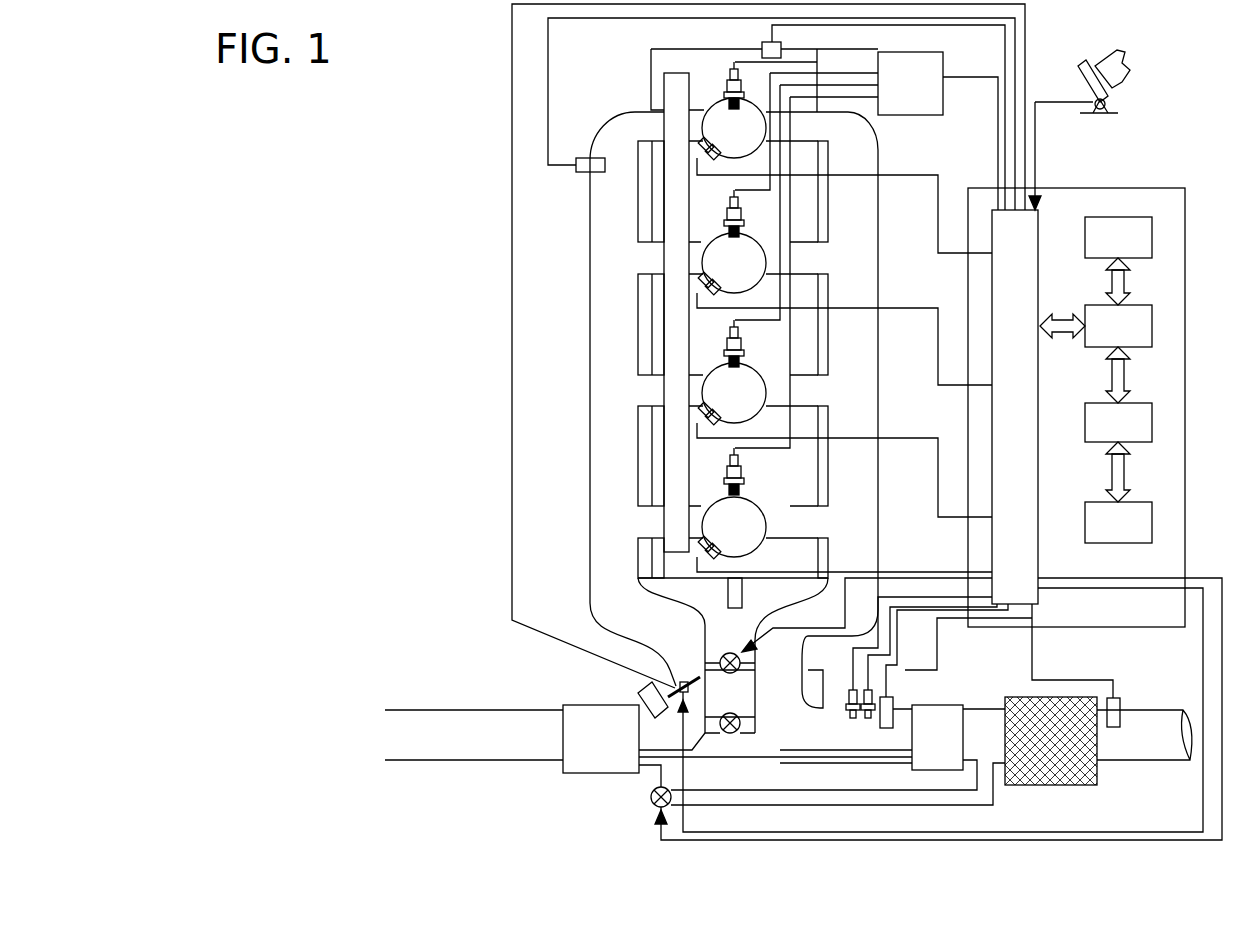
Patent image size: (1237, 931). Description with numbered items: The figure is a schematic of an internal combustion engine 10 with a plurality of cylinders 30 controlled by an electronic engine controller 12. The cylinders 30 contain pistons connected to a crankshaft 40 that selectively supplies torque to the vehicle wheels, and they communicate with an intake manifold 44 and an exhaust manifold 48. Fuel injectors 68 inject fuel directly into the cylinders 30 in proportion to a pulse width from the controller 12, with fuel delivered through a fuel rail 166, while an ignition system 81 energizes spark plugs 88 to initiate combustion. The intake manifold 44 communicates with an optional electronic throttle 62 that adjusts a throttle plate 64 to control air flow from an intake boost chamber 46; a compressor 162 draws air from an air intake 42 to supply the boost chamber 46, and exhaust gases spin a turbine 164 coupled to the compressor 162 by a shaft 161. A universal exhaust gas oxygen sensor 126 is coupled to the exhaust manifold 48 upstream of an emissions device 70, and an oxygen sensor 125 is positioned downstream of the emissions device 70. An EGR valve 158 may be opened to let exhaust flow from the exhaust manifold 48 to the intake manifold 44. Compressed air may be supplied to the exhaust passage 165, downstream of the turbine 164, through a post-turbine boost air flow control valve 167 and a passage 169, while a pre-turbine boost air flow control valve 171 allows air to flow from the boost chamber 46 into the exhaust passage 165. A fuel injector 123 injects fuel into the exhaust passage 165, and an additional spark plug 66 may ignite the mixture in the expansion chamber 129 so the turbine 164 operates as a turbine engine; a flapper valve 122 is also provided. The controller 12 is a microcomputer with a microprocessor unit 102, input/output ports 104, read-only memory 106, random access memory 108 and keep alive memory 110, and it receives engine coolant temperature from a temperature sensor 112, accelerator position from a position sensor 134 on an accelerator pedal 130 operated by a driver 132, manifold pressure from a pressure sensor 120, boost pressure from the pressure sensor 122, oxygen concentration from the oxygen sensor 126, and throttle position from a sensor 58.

The internal combustion engine 10 is at (462, 142).
The electronic engine controller 12 is at (1150, 188).
The cylinders 30 is at (734, 327).
The crankshaft 40 is at (728, 596).
The air intake 42 is at (465, 749).
The intake manifold 44 is at (628, 364).
The intake boost chamber 46 is at (676, 742).
The exhaust manifold 48 is at (863, 274).
The throttle position sensor 58 is at (706, 693).
The electronic throttle 62 is at (640, 680).
The throttle plate 64 is at (676, 678).
The additional spark plug 66 is at (865, 722).
The fuel injectors 68 is at (702, 160).
The emissions device 70 is at (1061, 750).
The ignition system 81 is at (922, 95).
The spark plugs 88 is at (727, 96).
The microprocessor unit 102 is at (1152, 318).
The input/output ports 104 is at (1040, 217).
The read-only memory 106 is at (1152, 232).
The random access memory 108 is at (1152, 415).
The keep alive memory 110 is at (1152, 512).
The temperature sensor 112 is at (778, 50).
The pressure sensor 120 is at (578, 173).
The pressure sensor 122 is at (640, 693).
The fuel injector 123 is at (846, 722).
The oxygen sensor 125 is at (1121, 705).
The universal exhaust gas oxygen sensor 126 is at (886, 730).
The expansion chamber 129 is at (832, 740).
The accelerator pedal 130 is at (1080, 80).
The driver 132 is at (1128, 65).
The position sensor 134 is at (1120, 108).
The EGR valve 158 is at (740, 636).
The shaft 161 is at (752, 760).
The compressor 162 is at (618, 750).
The turbine 164 is at (958, 750).
The exhaust passage 165 is at (1112, 780).
The fuel rail 166 is at (662, 106).
The post-turbine boost air flow control valve 167 is at (652, 805).
The passage 169 is at (805, 815).
The pre-turbine boost air flow control valve 171 is at (760, 745).